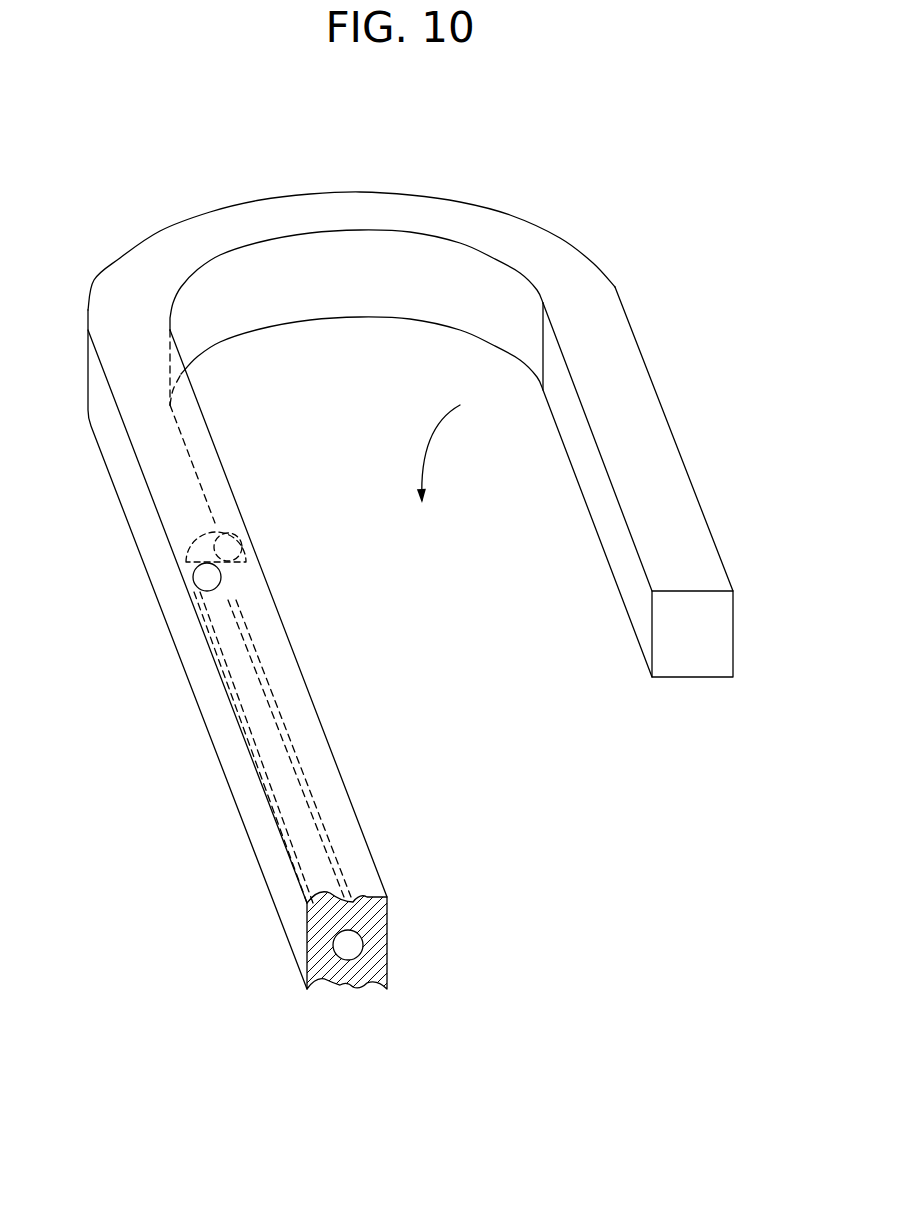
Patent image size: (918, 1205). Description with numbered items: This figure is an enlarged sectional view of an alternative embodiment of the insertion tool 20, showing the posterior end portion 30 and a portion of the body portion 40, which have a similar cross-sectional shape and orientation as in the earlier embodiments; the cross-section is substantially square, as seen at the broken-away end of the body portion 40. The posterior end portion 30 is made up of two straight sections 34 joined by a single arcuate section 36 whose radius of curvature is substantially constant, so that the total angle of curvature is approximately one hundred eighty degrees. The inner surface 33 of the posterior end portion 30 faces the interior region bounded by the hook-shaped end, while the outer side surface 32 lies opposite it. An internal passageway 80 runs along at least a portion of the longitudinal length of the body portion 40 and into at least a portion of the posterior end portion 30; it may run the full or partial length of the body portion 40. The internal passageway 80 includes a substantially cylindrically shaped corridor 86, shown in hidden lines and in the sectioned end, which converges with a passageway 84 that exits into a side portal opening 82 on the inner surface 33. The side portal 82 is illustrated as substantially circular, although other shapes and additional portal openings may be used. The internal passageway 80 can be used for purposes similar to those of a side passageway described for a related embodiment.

The insertion tool 20 is at (480, 702).
The posterior end portion 30 is at (656, 331).
The outer side surface 32 is at (235, 758).
The inner surface 33 is at (587, 483).
The straight sections 34 is at (208, 467).
The arcuate section 36 is at (340, 205).
The body portion 40 is at (178, 918).
The internal passageway 80 is at (273, 688).
The side portal opening 82 is at (250, 537).
The passageway 84 is at (215, 530).
The corridor 86 is at (280, 772).